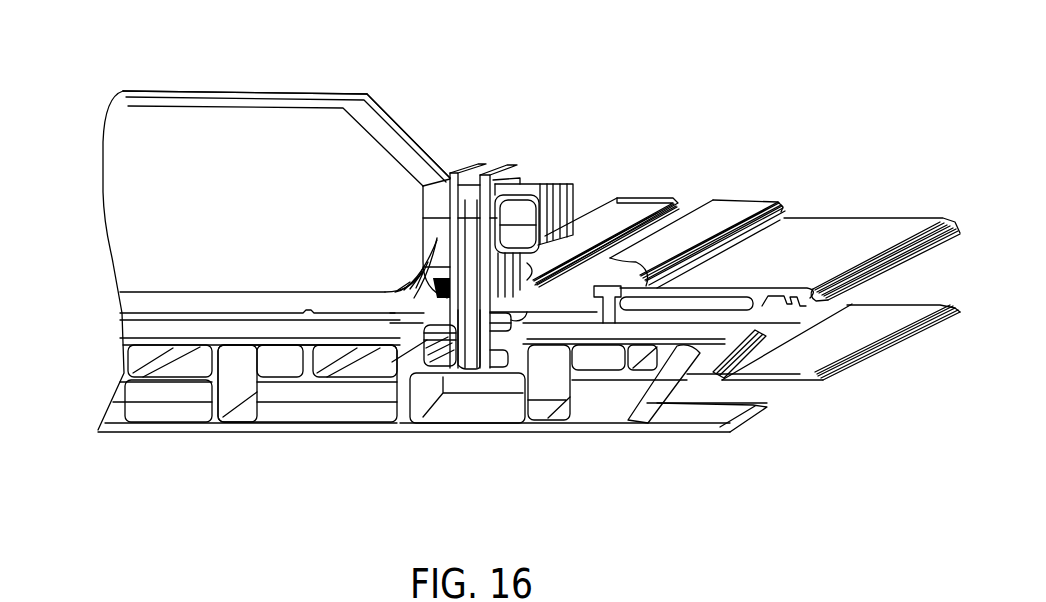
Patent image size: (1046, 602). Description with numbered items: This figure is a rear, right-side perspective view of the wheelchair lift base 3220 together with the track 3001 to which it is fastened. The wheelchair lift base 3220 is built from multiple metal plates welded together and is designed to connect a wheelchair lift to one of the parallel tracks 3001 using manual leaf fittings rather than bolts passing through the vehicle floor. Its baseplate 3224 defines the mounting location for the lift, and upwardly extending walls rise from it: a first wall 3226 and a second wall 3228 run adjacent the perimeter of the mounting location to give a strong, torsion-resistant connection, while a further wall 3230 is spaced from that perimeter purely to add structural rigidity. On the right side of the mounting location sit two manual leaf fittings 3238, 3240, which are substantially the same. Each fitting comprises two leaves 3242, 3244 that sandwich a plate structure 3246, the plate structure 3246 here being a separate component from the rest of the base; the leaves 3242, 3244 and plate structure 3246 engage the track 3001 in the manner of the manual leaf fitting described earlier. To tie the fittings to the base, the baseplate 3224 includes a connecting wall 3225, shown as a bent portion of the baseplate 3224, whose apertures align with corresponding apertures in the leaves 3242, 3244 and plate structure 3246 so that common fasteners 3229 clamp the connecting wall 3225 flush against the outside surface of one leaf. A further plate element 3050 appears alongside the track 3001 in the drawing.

The track 3001 is at (727, 207).
The plate 3050 is at (832, 236).
The wheelchair lift base 3220 is at (394, 108).
The baseplate 3224 is at (247, 300).
The connecting wall 3225 is at (440, 240).
The first wall 3226 is at (232, 230).
The second wall 3228 is at (223, 98).
The common fasteners 3229 is at (548, 166).
The wall 3230 is at (375, 97).
The manual leaf fitting 3238 is at (463, 152).
The manual leaf fitting 3240 is at (513, 152).
The leaf 3242 is at (427, 393).
The leaf 3244 is at (500, 355).
The plate structure 3246 is at (473, 360).